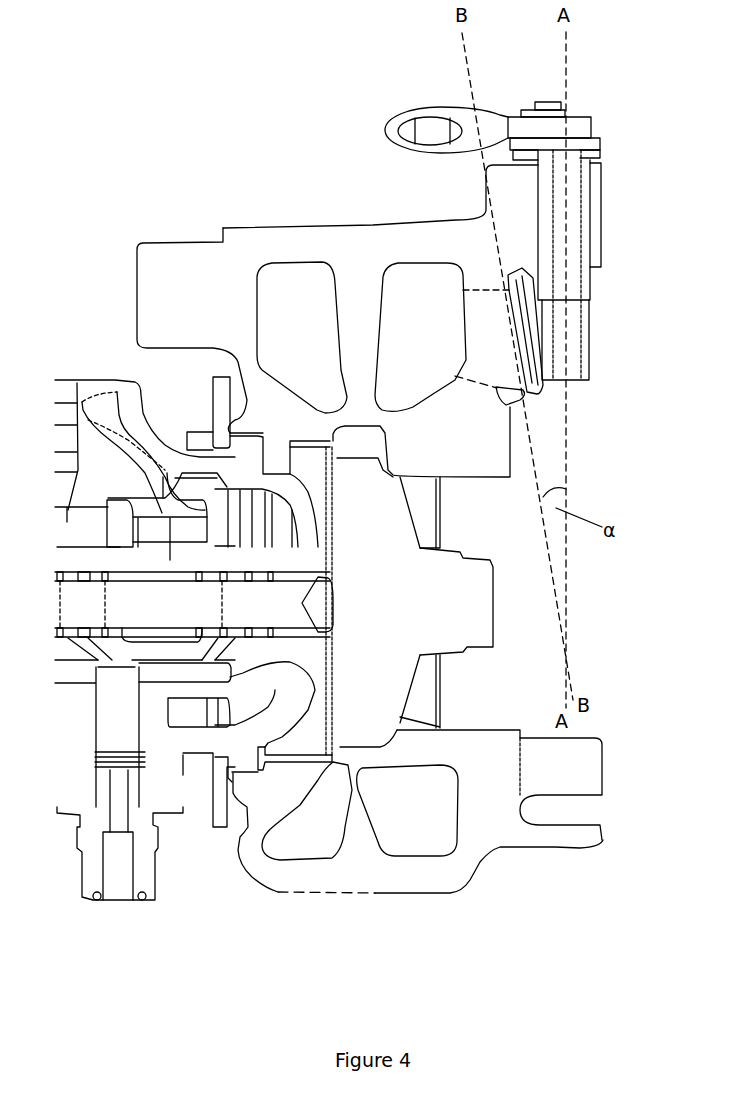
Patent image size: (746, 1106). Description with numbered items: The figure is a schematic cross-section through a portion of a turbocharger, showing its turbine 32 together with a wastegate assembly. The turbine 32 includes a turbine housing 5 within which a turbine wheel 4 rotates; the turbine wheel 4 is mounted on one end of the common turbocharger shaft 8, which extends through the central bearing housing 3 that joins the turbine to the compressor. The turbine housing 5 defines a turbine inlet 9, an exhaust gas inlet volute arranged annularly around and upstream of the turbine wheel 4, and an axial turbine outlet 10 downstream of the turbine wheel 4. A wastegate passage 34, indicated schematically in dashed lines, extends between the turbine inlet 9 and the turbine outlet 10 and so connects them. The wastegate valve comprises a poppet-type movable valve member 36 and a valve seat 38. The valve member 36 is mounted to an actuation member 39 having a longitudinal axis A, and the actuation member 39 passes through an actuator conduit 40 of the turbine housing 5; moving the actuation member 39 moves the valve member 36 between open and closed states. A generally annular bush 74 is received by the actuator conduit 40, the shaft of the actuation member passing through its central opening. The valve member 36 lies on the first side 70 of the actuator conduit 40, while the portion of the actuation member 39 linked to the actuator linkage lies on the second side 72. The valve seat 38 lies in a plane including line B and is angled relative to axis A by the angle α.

The central bearing housing 3 is at (133, 413).
The turbine wheel 4 is at (363, 717).
The turbine housing 5 is at (237, 270).
The turbocharger shaft 8 is at (148, 607).
The turbine inlet 9 is at (420, 347).
The turbine outlet 10 is at (518, 543).
The turbine 32 is at (555, 893).
The wastegate passage 34 is at (486, 312).
The movable valve member 36 is at (533, 340).
The valve seat 38 is at (514, 400).
The actuation member 39 is at (571, 263).
The actuator conduit 40 is at (582, 208).
The first side of the actuator conduit 70 is at (598, 350).
The second side of the actuator conduit 72 is at (613, 133).
The bush 74 is at (585, 252).